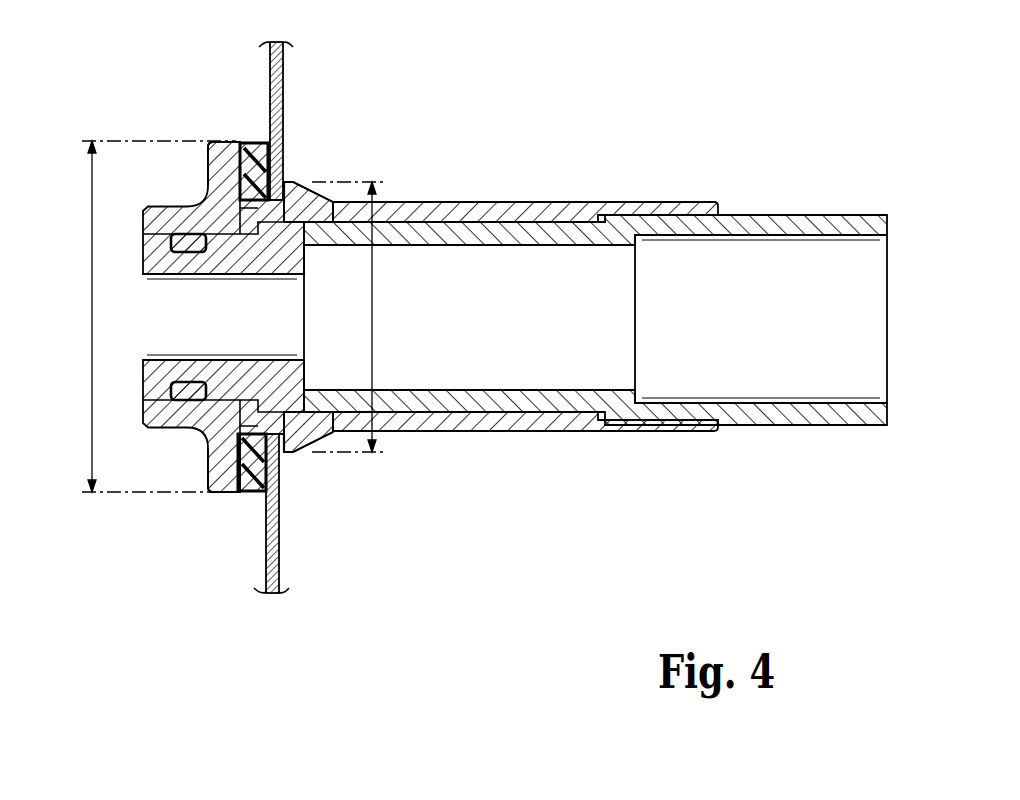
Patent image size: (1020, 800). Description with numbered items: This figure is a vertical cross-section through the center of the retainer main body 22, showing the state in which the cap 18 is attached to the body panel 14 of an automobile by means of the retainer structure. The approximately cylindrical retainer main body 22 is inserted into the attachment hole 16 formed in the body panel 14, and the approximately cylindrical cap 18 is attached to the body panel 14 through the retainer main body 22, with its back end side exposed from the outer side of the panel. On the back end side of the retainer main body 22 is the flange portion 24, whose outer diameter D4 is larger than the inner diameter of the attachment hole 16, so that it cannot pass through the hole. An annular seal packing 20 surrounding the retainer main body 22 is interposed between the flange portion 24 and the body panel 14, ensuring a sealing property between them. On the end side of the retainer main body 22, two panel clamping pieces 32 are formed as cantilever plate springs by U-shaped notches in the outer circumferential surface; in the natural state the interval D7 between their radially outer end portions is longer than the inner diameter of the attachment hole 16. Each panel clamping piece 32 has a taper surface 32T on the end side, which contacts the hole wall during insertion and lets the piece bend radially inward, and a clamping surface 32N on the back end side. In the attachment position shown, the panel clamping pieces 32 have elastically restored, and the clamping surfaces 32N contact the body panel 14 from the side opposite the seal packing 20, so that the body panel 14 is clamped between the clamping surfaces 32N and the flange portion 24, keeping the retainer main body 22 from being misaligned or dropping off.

The body panel 14 is at (280, 577).
The attachment hole 16 is at (213, 440).
The cap 18 is at (797, 212).
The seal packing 20 is at (252, 494).
The retainer main body 22 is at (513, 201).
The flange portion 24 is at (230, 142).
The panel clamping pieces 32 is at (300, 183).
The clamping surfaces 32N is at (285, 186).
The taper surfaces 32T is at (312, 178).
The outer diameter of the flange portion D4 is at (90, 318).
The interval between end portions of the panel clamping pieces D7 is at (375, 318).